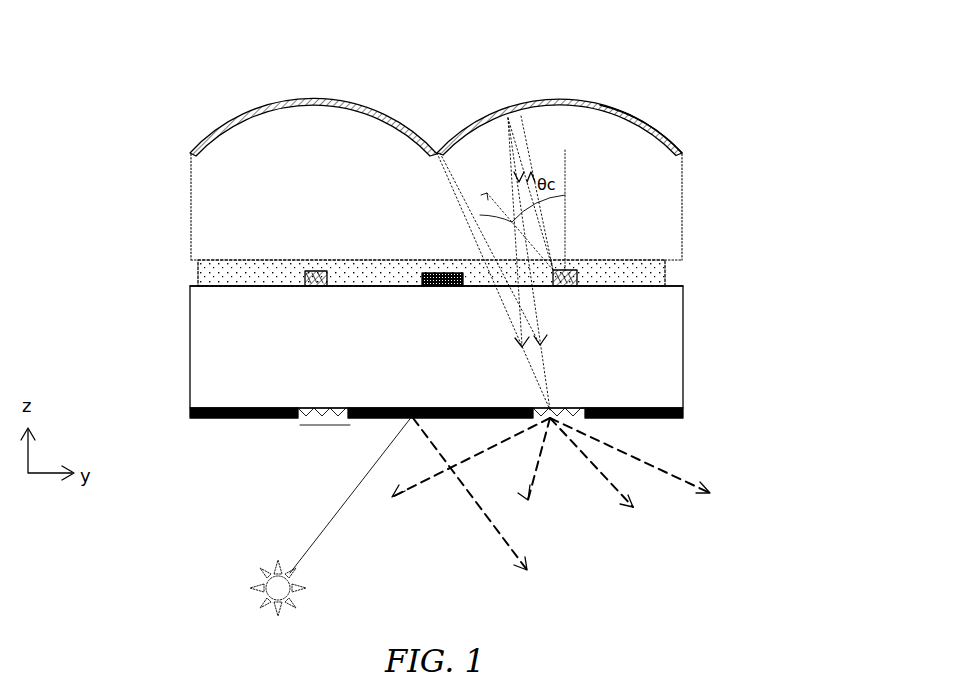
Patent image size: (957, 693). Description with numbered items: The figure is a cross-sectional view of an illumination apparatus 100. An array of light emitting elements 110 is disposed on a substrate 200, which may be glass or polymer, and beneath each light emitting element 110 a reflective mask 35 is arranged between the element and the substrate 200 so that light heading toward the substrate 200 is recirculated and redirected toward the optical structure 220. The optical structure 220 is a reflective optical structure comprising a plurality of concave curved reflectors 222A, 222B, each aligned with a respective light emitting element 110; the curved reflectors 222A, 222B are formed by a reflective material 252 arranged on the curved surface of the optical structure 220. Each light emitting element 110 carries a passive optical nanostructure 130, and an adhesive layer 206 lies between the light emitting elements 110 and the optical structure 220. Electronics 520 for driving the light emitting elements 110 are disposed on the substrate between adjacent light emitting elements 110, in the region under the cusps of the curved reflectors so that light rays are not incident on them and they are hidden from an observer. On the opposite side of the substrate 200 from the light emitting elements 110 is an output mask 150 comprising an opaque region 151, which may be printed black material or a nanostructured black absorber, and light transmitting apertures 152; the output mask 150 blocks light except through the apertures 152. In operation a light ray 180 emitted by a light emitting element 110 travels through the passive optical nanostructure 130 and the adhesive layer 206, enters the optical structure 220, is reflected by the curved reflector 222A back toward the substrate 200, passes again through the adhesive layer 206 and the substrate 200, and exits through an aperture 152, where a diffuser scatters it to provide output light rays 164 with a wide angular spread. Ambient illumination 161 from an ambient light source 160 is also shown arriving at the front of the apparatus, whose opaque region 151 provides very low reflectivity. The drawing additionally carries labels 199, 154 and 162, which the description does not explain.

The illumination apparatus 100 is at (203, 90).
The concave curved reflector 222A is at (297, 100).
The concave curved reflector 222B is at (547, 110).
The reflective material 252 is at (627, 110).
The optical axis normal 199 is at (565, 165).
The light ray 180 is at (550, 220).
The optical structure 220 is at (169, 147).
The passive optical nanostructure 130 is at (305, 272).
The light emitting element 110 is at (305, 284).
The reflective mask 35 is at (233, 286).
The adhesive layer 206 is at (665, 275).
The electronics 520 is at (432, 272).
The substrate 200 is at (190, 346).
The output mask 150 is at (190, 408).
The opaque region 151 is at (203, 420).
The first aperture 154 is at (312, 413).
The light transmitting aperture 152 is at (320, 425).
The ambient illumination 161 is at (320, 533).
The transmitted light ray 162 is at (500, 528).
The output light rays 164 is at (665, 470).
The ambient light source 160 is at (277, 592).